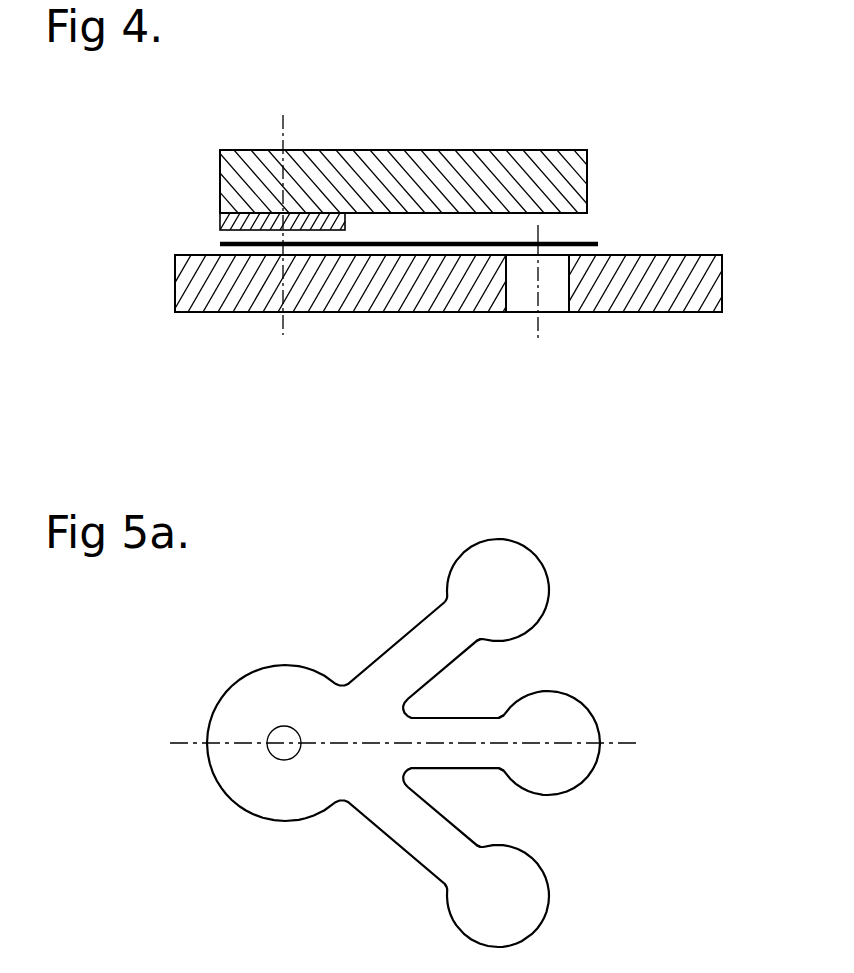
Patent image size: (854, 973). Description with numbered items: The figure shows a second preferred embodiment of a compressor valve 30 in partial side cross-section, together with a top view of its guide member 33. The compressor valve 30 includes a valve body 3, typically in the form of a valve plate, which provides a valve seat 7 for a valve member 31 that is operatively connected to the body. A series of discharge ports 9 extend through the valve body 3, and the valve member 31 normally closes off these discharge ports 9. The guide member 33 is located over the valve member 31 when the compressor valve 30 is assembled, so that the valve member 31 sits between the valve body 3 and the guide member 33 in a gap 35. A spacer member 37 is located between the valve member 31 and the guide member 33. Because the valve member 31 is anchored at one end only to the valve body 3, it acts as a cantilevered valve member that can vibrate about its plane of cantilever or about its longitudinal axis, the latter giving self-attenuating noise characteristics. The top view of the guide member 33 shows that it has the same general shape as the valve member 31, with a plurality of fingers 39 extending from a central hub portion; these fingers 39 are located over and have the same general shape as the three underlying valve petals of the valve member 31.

In FIG. 4, the compressor valve 30 is at (183, 178).
In FIG. 4, the guide member 33 is at (411, 150).
In FIG. 5A, the guide member 33 is at (215, 670).
In FIG. 4, the spacer member 37 is at (228, 228).
In FIG. 4, the gap 35 is at (542, 234).
In FIG. 4, the valve member 31 is at (595, 239).
In FIG. 4, the valve seat 7 is at (603, 257).
In FIG. 4, the valve body 3 is at (379, 292).
In FIG. 4, the discharge ports 9 is at (518, 298).
In FIG. 5A, the fingers 39 is at (513, 563).